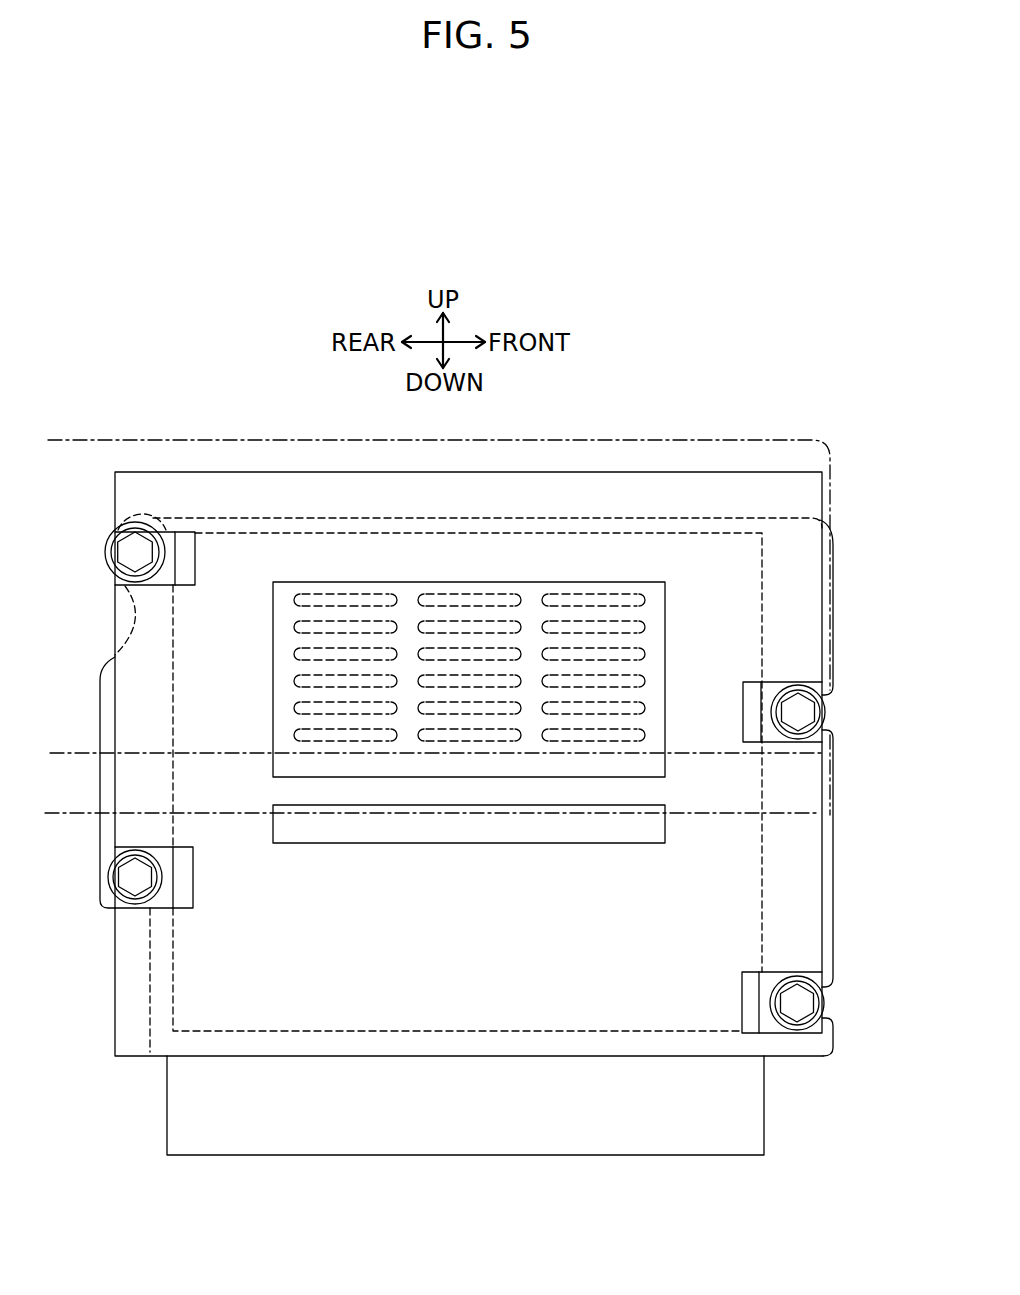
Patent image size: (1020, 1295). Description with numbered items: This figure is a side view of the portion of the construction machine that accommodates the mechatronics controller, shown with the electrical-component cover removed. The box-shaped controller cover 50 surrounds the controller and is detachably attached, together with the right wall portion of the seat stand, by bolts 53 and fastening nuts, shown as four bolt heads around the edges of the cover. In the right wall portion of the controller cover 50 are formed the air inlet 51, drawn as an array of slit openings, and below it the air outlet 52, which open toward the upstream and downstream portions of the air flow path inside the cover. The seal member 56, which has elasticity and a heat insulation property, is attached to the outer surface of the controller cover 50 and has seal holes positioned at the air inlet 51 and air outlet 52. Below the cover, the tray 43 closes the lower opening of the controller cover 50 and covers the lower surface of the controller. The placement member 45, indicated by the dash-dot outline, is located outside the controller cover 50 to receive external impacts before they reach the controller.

The tray 43 is at (757, 1107).
The placement member 45 is at (662, 440).
The controller cover 50 is at (832, 920).
The air inlet 51 is at (660, 636).
The air outlet 52 is at (520, 838).
The bolts 53 is at (104, 553).
The seal member 56 is at (810, 862).